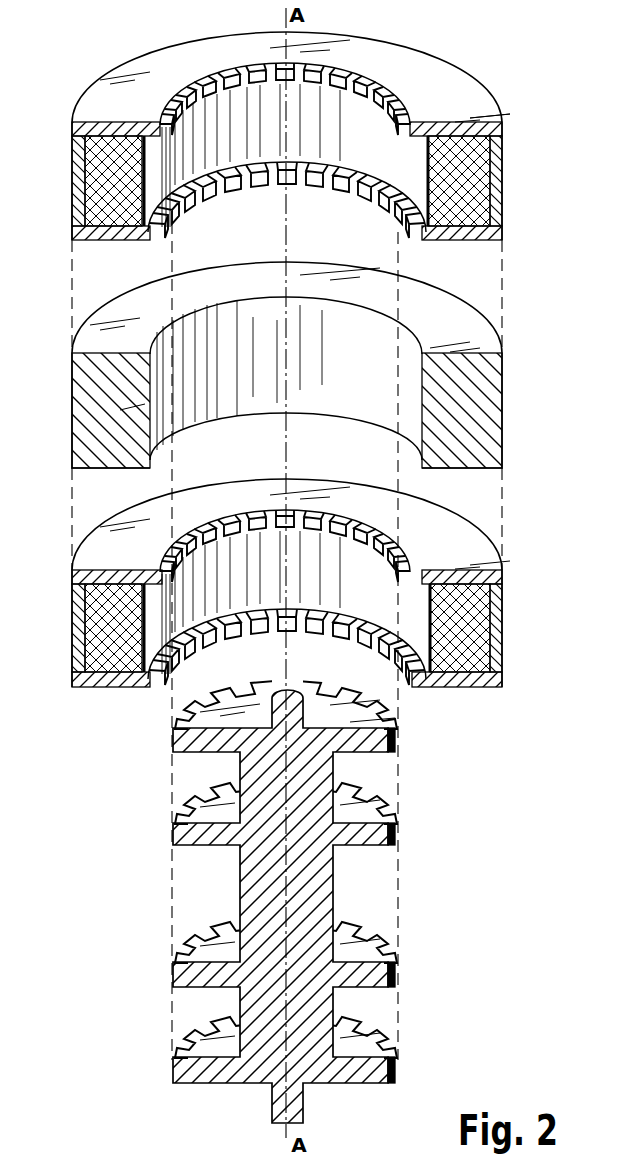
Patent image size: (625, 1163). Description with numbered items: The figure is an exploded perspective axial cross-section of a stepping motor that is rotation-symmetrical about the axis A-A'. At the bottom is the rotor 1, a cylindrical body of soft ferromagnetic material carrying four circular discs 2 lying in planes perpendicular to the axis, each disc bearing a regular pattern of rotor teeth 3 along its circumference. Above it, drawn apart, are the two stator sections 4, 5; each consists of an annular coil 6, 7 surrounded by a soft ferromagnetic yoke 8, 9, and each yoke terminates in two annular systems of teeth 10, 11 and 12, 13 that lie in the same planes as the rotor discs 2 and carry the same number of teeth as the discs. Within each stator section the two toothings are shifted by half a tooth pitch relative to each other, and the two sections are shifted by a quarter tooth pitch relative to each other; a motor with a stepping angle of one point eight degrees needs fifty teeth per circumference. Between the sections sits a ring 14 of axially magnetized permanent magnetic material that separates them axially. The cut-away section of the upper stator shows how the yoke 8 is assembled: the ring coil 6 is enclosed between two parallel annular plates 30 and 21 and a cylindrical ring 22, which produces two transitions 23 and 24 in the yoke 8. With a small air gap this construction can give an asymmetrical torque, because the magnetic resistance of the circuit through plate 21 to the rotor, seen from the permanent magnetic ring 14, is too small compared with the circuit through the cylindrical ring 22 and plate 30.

The rotor 1 is at (315, 892).
The circular discs 2 is at (195, 738).
The rotor teeth 3 is at (373, 703).
The stator section 4 is at (296, 147).
The stator section 5 is at (286, 586).
The annular coil 6 is at (100, 172).
The annular coil 7 is at (100, 624).
The yoke 8 is at (80, 129).
The yoke 9 is at (80, 578).
The annular system of teeth 10 is at (265, 80).
The annular system of teeth 11 is at (240, 185).
The annular system of teeth 12 is at (233, 533).
The annular system of teeth 13 is at (250, 630).
The ring of permanent magnetic material 14 is at (508, 410).
The annular plate 21 is at (497, 240).
The cylindrical ring 22 is at (496, 190).
The transition 23 is at (432, 228).
The transition 24 is at (432, 130).
The annular plate 30 is at (478, 118).